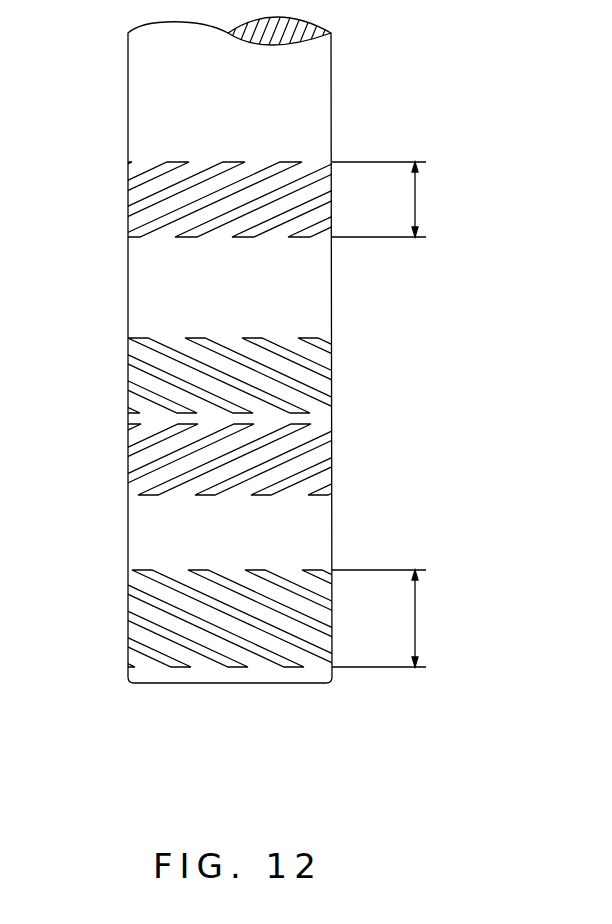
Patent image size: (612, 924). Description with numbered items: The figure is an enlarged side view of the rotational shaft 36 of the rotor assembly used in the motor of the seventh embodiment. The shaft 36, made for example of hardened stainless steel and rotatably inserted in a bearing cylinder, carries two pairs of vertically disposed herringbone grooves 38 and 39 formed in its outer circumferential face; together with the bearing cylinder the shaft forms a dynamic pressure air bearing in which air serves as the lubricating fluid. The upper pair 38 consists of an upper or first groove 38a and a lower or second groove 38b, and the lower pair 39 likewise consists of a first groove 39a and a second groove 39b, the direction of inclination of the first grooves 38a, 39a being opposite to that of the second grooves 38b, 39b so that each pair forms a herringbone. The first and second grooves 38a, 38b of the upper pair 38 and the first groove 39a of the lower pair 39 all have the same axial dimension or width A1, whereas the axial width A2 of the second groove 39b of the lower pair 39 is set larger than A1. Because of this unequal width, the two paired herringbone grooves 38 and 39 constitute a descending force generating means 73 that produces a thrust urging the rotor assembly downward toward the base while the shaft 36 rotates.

The rotational shaft 36 is at (316, 74).
The upper pair of herringbone grooves 38 is at (239, 239).
The first groove 38a is at (177, 161).
The second groove 38b is at (202, 338).
The lower pair of herringbone grooves 39 is at (265, 545).
The first groove 39a is at (321, 438).
The second groove 39b is at (258, 570).
The descending force generating means 73 is at (160, 667).
The axial dimension or width A1 is at (392, 199).
The axial dimension or width A2 is at (392, 618).